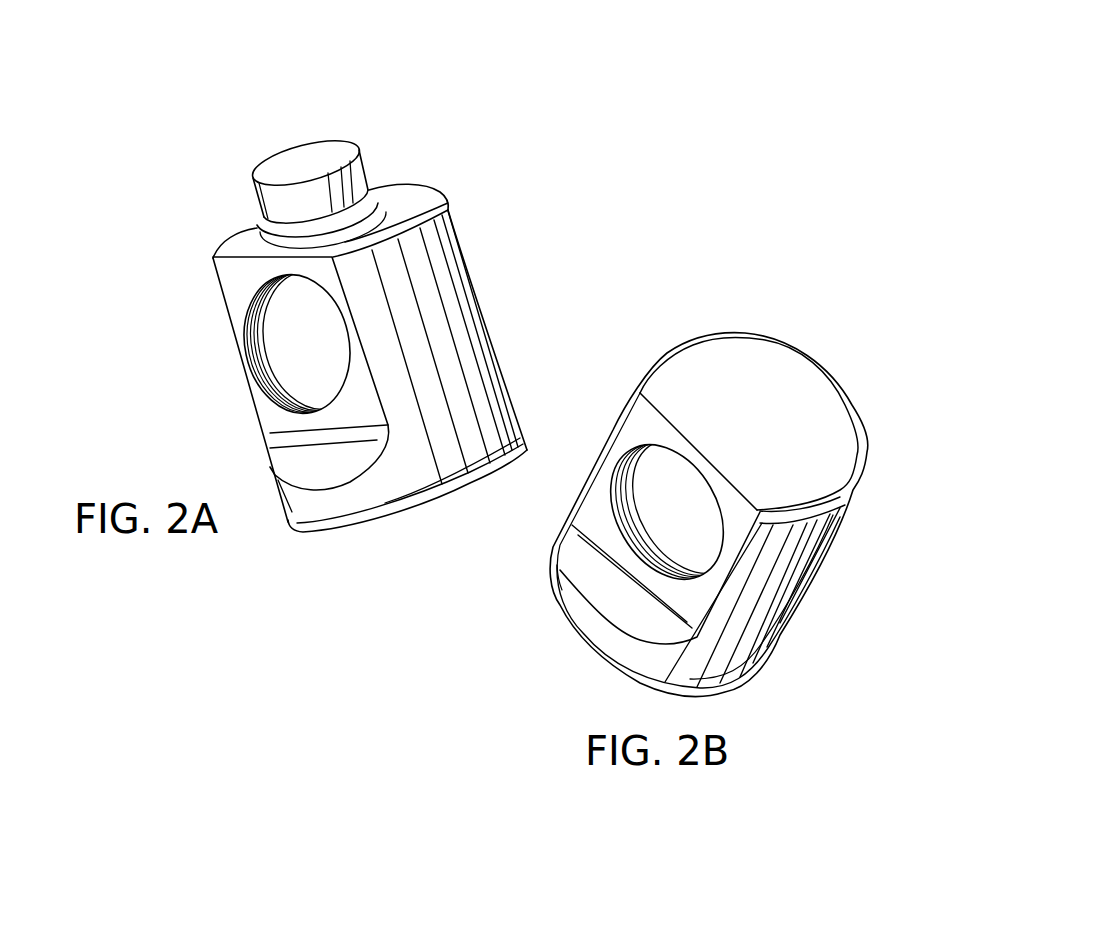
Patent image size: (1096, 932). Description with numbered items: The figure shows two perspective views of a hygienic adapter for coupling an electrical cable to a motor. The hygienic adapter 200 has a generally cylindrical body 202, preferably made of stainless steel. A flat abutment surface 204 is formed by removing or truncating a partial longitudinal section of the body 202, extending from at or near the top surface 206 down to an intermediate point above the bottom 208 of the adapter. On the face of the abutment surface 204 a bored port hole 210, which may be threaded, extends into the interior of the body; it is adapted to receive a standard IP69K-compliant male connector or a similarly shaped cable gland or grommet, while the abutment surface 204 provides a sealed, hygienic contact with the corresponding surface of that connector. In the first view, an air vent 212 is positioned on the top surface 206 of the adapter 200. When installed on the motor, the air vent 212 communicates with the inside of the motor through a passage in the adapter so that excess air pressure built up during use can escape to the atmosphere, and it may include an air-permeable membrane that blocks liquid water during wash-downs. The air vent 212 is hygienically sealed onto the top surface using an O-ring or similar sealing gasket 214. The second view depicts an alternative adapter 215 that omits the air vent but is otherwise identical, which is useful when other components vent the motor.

In FIG. 2A, the hygienic adapter 200 is at (224, 58).
In FIG. 2A, the body 202 is at (450, 328).
In FIG. 2A, the flat abutment surface 204 is at (235, 281).
In FIG. 2A, the top surface 206 is at (405, 192).
In FIG. 2A, the bottom 208 is at (371, 535).
In FIG. 2A, the port hole 210 is at (300, 337).
In FIG. 2A, the air vent 212 is at (370, 173).
In FIG. 2A, the sealing gasket 214 is at (255, 228).
In FIG. 2B, the adapter 215 is at (723, 287).